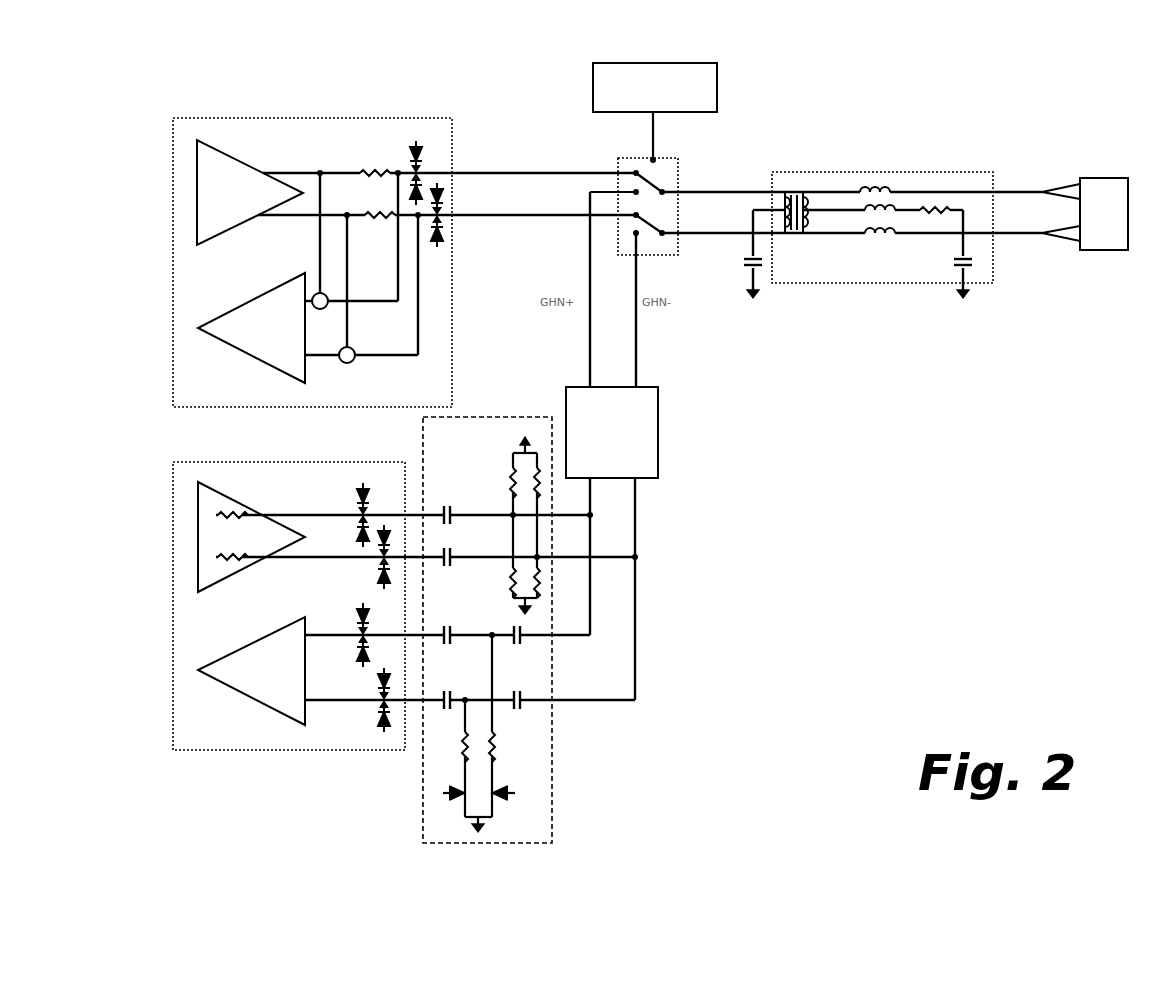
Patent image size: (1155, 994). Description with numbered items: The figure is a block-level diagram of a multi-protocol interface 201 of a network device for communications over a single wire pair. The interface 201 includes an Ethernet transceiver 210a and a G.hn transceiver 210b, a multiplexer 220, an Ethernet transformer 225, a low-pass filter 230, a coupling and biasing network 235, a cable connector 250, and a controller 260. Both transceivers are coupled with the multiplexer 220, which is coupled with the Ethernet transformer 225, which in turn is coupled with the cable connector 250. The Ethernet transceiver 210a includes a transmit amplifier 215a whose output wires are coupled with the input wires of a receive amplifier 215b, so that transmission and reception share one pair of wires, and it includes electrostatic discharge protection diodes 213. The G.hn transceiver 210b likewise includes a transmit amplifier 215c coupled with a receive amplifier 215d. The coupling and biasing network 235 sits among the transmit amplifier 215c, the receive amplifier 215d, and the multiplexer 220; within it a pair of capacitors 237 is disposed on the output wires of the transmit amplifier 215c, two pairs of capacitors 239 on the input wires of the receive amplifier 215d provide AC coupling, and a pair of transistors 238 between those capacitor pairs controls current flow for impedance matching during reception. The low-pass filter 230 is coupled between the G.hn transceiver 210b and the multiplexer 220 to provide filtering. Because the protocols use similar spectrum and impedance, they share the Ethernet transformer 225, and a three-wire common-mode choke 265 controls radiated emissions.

The multi-protocol interface 201 is at (218, 96).
The Ethernet transceiver 210a is at (173, 162).
The G.hn transceiver 210b is at (173, 479).
The electrostatic discharge protection diodes 213 is at (423, 162).
The transmit amplifier 215a is at (250, 192).
The receive amplifier 215b is at (251, 328).
The transmit amplifier 215c is at (251, 537).
The receive amplifier 215d is at (251, 671).
The multiplexer 220 is at (676, 176).
The Ethernet transformer 225 is at (852, 214).
The low-pass filter 230 is at (658, 404).
The coupling and biasing network 235 is at (484, 610).
The capacitors 237 is at (442, 506).
The transistors 238 is at (442, 794).
The capacitors 239 is at (400, 770).
The cable connector 250 is at (1090, 178).
The controller 260 is at (716, 87).
The 3-wire common-mode choke 265 is at (846, 207).